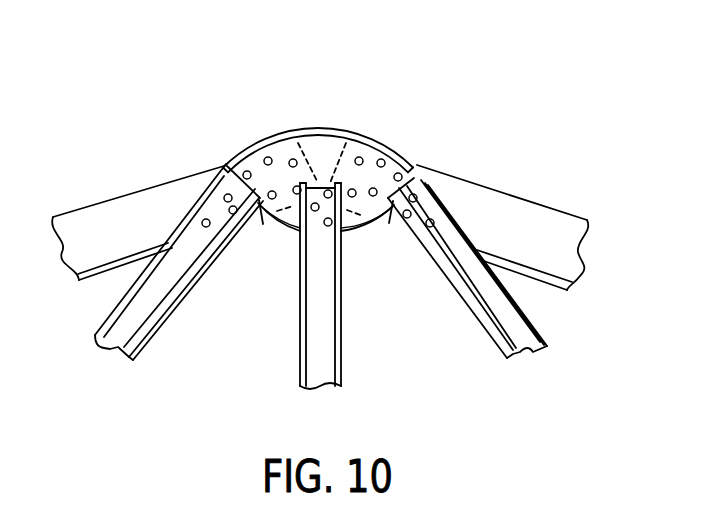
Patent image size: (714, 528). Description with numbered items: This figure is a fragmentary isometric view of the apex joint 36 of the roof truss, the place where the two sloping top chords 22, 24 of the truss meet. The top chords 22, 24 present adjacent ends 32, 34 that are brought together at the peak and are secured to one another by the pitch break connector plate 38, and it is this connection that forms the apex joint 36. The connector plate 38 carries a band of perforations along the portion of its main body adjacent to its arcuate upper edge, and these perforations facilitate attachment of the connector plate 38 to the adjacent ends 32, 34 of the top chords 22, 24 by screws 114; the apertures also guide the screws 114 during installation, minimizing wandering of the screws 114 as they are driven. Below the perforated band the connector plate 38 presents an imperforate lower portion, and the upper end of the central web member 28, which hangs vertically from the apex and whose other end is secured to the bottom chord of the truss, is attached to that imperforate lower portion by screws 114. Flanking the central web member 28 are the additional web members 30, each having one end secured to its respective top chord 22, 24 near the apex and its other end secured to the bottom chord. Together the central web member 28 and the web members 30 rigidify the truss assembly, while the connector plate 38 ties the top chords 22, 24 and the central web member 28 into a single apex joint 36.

The top chord 22 is at (90, 221).
The top chord 24 is at (583, 226).
The central web member 28 is at (307, 352).
The web member 30 is at (110, 349).
The adjacent end 32 is at (278, 143).
The adjacent end 34 is at (360, 147).
The apex joint 36 is at (322, 121).
The pitch break connector plate 38 is at (400, 142).
The screws 114 is at (290, 161).